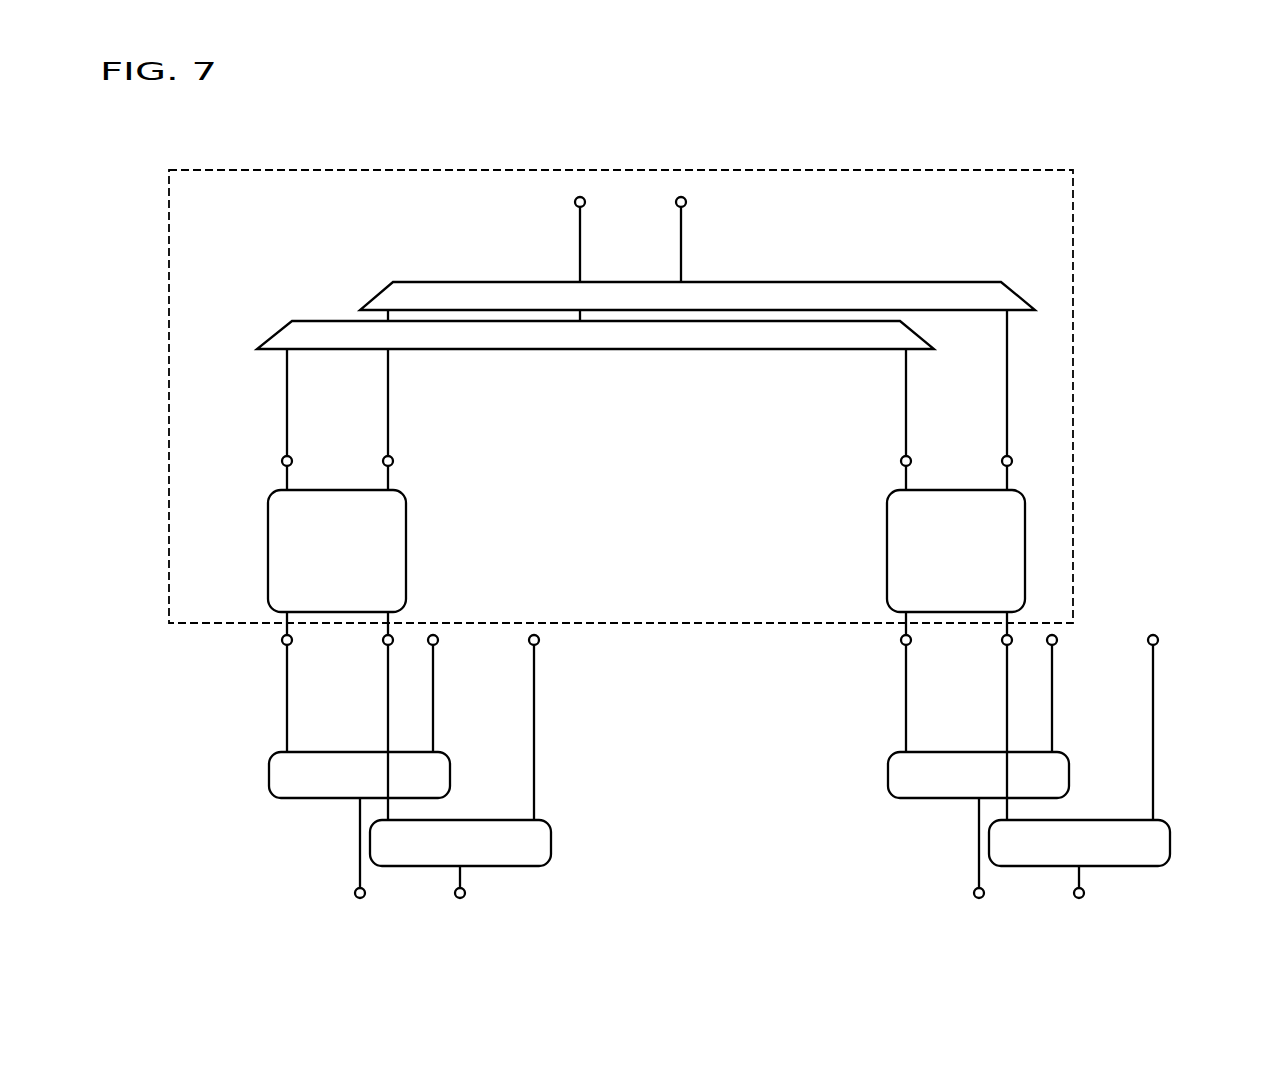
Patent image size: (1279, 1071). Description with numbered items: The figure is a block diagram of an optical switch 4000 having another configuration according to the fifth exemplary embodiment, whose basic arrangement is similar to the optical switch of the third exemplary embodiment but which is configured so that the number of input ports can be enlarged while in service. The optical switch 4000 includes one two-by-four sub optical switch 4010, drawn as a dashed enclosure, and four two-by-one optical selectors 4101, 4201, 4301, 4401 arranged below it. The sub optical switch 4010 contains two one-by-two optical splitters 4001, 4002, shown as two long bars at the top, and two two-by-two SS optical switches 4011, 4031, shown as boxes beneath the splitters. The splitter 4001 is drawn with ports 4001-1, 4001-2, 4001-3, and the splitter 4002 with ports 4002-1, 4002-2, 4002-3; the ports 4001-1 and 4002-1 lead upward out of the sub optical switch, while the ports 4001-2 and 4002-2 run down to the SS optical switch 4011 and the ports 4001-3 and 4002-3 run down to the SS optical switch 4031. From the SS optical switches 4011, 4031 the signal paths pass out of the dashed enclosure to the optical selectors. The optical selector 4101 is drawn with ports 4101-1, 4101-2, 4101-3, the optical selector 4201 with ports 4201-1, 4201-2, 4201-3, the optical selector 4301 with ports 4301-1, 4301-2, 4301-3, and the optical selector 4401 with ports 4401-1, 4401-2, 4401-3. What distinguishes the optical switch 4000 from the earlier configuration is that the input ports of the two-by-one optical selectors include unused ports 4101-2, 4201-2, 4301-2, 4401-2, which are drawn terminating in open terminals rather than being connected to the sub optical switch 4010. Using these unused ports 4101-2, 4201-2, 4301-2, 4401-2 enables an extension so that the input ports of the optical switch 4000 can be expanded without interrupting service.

The optical switch 4000 is at (814, 135).
The 2×4 sub optical switch 4010 is at (1076, 240).
The 1×2 optical splitter 4001 is at (288, 324).
The 1×2 optical splitter 4002 is at (390, 286).
The first port of first optical bus 4001-1 is at (578, 246).
The second port of first optical bus 4001-2 is at (315, 446).
The third port of first optical bus 4001-3 is at (950, 419).
The first port of second optical bus 4002-1 is at (680, 247).
The second port of second optical bus 4002-2 is at (388, 402).
The third port of second optical bus 4002-3 is at (964, 400).
The 2×2 SS optical switch 4011 is at (406, 547).
The 2×2 SS optical switch 4031 is at (915, 551).
The 2×1 optical selector 4101 is at (269, 777).
The first input port of first optical coupler 4101-1 is at (315, 732).
The unused port 4101-2 is at (461, 732).
The output port of first optical coupler 4101-3 is at (355, 894).
The 2×1 optical selector 4201 is at (551, 838).
The first input port of second optical coupler 4201-1 is at (388, 688).
The unused port 4201-2 is at (534, 689).
The output port of second optical coupler 4201-3 is at (466, 891).
The 2×1 optical selector 4301 is at (937, 775).
The first input port of third optical coupler 4301-1 is at (950, 682).
The unused port 4301-2 is at (1096, 693).
The output port of third optical coupler 4301-3 is at (919, 853).
The 2×1 optical selector 4401 is at (1123, 843).
The first input port of fourth optical coupler 4401-1 is at (963, 716).
The unused port 4401-2 is at (1110, 727).
The output port of fourth optical coupler 4401-3 is at (1140, 885).